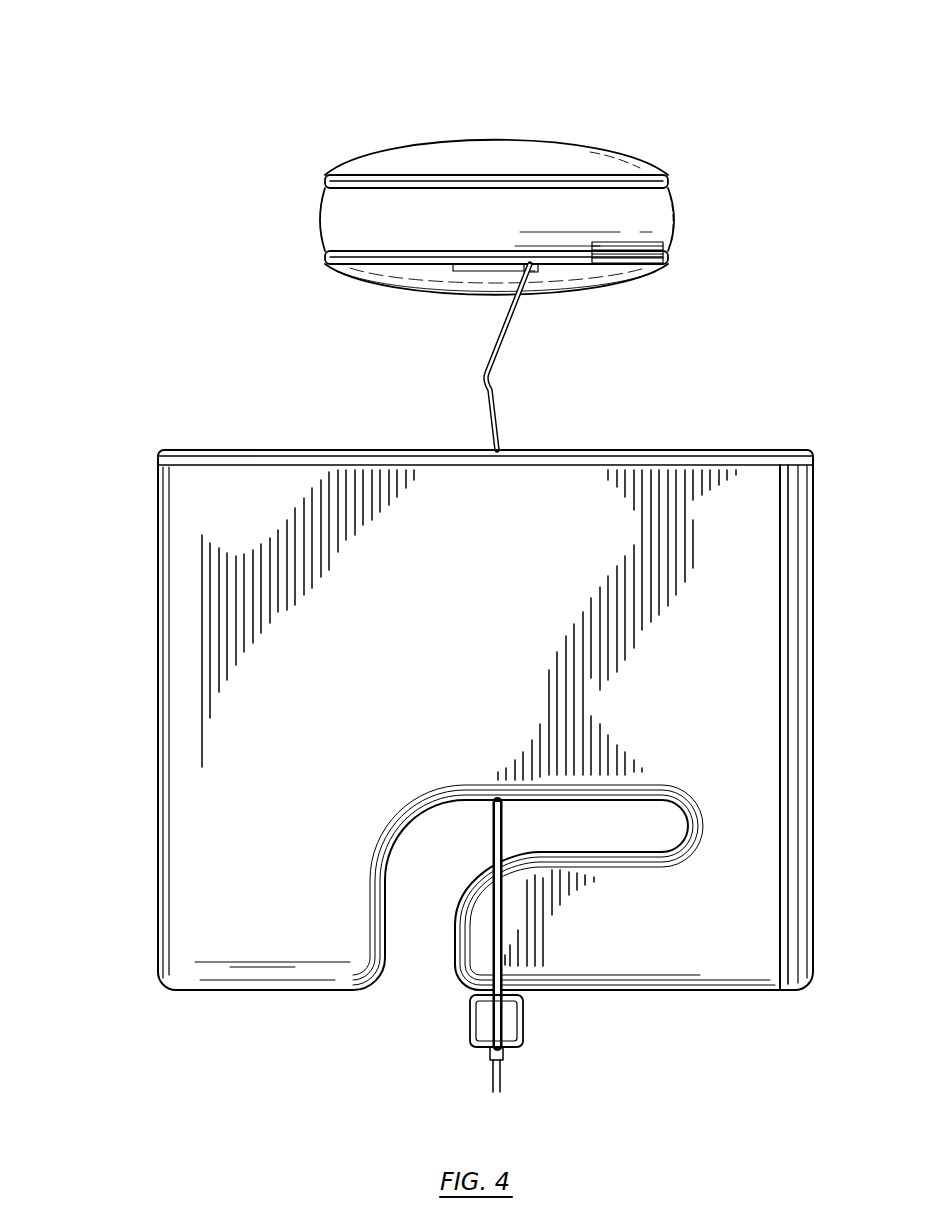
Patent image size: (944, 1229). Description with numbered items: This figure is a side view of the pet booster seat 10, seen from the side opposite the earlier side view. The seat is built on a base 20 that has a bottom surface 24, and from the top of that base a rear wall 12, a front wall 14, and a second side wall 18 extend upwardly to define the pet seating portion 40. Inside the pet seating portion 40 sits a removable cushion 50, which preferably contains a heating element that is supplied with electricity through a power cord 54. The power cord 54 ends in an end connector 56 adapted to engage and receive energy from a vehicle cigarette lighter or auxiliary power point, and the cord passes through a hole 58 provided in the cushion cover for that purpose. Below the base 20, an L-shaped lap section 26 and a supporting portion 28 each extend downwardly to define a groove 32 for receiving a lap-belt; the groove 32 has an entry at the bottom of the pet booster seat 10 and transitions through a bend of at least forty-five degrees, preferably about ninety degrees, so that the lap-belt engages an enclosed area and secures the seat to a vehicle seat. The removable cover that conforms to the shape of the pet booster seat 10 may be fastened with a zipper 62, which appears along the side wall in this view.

The pet booster seat 10 is at (122, 300).
The rear wall 12 is at (815, 620).
The front wall 14 is at (158, 692).
The second side wall 18 is at (747, 543).
The base 20 is at (740, 757).
The bottom surface 24 is at (467, 803).
The L-shaped lap section 26 is at (568, 900).
The supporting portion 28 is at (175, 918).
The groove 32 is at (618, 835).
The pet seating portion 40 is at (130, 573).
The removable cushion 50 is at (462, 148).
The power cord 54 is at (487, 373).
The end connector 56 is at (470, 1045).
The hole 58 is at (533, 268).
The zipper 62 is at (800, 843).